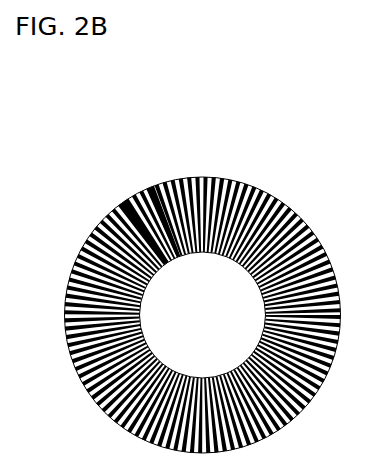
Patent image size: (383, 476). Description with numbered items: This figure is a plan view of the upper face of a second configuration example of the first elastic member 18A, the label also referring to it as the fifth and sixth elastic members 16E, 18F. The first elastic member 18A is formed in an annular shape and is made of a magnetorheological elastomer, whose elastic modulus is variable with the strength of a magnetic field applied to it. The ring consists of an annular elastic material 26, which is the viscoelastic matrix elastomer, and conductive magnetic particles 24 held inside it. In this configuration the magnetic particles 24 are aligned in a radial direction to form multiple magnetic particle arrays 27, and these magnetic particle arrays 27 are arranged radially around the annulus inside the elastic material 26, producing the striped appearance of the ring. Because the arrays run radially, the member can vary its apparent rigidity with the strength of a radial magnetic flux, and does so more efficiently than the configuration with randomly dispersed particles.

The first elastic member 18A is at (176, 97).
The optical element 16E is at (202, 315).
The optical element 18F is at (202, 315).
The magnetic particles 24 is at (150, 187).
The elastic material 26 is at (122, 202).
The magnetic particle arrays 27 is at (211, 177).